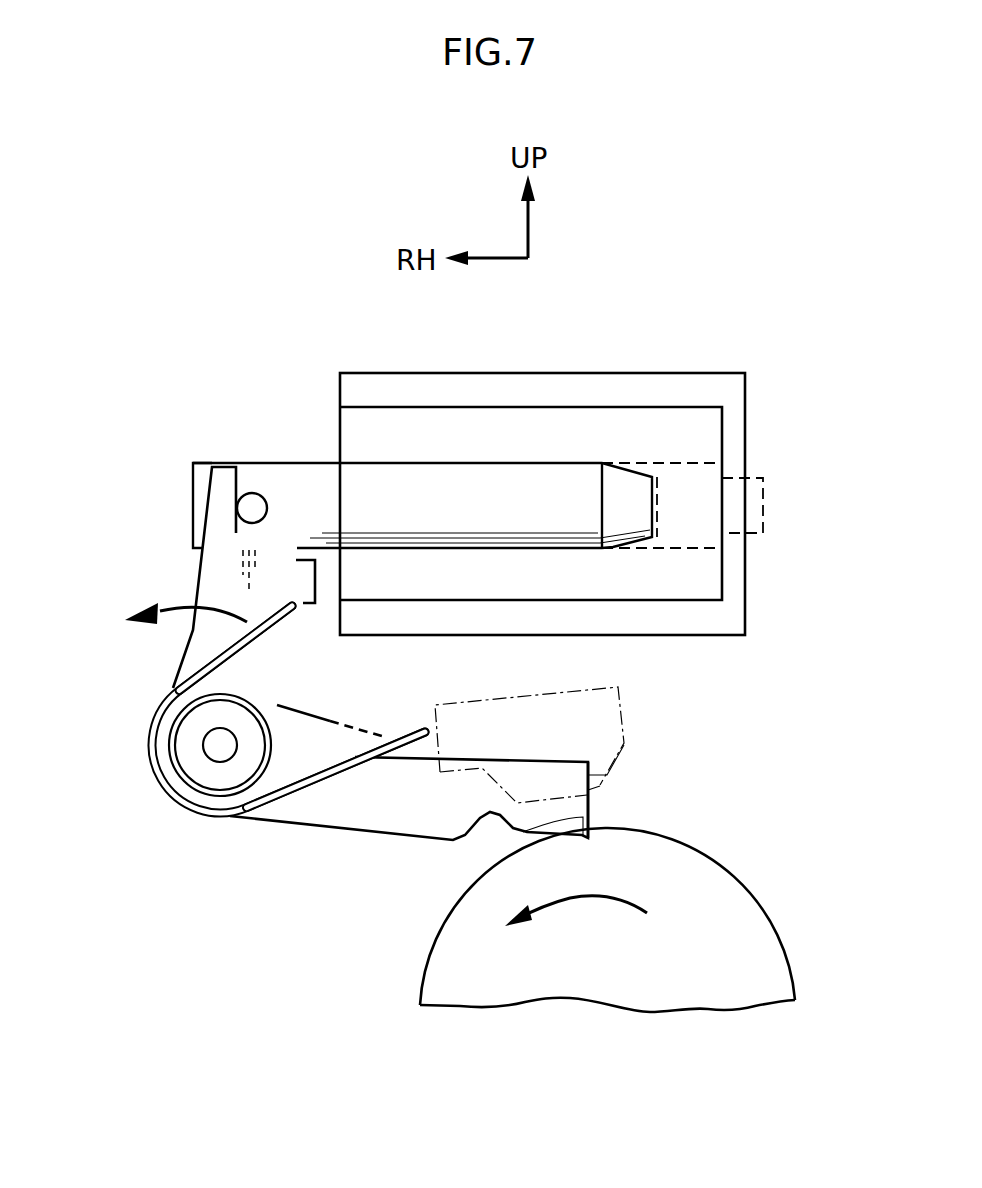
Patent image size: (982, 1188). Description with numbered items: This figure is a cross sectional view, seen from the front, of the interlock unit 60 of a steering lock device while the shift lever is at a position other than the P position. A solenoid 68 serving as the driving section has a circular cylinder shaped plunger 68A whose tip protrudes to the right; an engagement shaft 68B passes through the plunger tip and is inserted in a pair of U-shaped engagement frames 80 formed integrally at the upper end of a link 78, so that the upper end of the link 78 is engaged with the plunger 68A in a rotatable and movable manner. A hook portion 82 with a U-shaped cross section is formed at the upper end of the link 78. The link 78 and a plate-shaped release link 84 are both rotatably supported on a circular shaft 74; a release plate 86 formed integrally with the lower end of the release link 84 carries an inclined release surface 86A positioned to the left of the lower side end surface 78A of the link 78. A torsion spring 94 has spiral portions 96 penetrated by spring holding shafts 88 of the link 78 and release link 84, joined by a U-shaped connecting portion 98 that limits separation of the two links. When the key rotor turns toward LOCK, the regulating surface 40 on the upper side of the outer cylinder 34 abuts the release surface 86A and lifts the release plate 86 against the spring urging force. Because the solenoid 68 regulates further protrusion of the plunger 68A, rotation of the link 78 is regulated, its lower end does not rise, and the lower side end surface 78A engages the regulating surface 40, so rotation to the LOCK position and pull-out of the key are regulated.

The interlock unit 60 is at (233, 364).
The solenoid 68 is at (582, 373).
The plunger 68A is at (302, 463).
The engagement shaft 68B is at (253, 493).
The engagement frame 80 is at (193, 478).
The hook portion 82 is at (320, 603).
The release link 84 is at (382, 729).
The link 78 is at (474, 846).
The lower side end surface 78A is at (600, 778).
The regulating surface 40 is at (520, 832).
The spring holding shaft 88 is at (197, 768).
The shaft 74 is at (222, 750).
The spiral portion 96 is at (150, 755).
The torsion spring 94 is at (210, 662).
The connecting portion 98 is at (318, 776).
The release plate 86 is at (622, 697).
The release surface 86A is at (618, 758).
The outer cylinder 34 is at (748, 857).